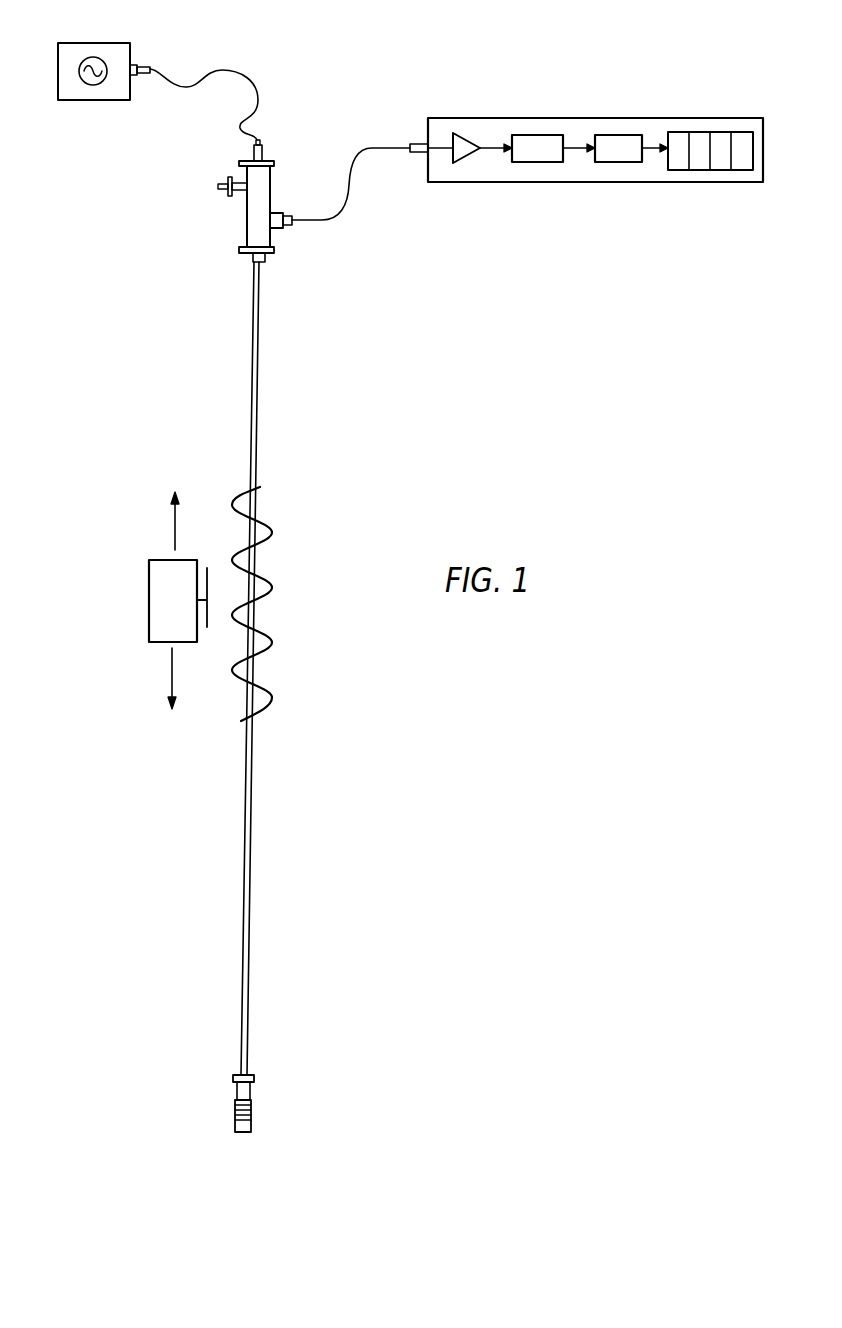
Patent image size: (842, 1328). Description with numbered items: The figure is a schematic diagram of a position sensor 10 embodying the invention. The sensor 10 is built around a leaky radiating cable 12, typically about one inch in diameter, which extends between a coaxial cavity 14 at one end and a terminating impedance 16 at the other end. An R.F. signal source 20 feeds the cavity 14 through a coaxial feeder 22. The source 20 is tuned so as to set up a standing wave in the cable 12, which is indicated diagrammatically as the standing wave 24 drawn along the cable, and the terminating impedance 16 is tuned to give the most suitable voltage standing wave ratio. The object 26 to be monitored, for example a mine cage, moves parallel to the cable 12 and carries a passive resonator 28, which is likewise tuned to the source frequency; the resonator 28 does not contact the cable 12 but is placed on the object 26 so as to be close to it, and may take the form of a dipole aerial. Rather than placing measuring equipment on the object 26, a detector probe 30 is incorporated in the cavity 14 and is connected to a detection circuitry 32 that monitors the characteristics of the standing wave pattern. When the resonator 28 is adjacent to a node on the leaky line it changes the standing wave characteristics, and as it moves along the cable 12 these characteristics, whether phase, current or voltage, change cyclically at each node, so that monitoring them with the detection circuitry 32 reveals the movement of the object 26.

The sensor 10 is at (180, 377).
The leaky radiating cable 12 is at (259, 380).
The coaxial cavity 14 is at (272, 180).
The terminating impedance 16 is at (255, 1106).
The R.F. signal source 20 is at (93, 100).
The coaxial feeder 22 is at (172, 67).
The standing wave 24 is at (268, 580).
The object to be monitored 26 is at (149, 588).
The passive resonator 28 is at (209, 573).
The detector probe 30 is at (281, 230).
The detection circuitry 32 is at (586, 183).